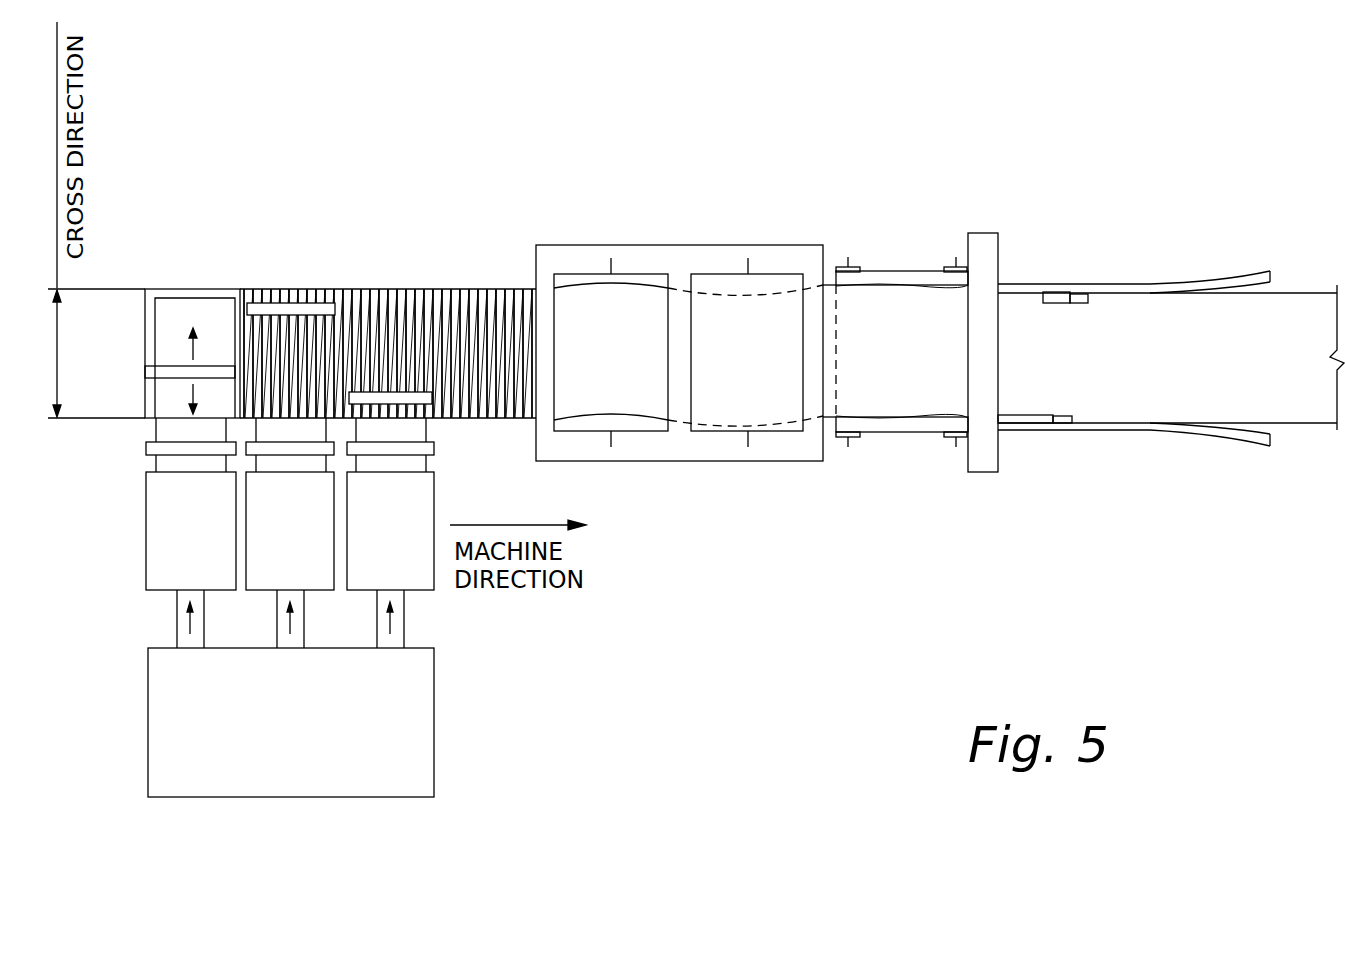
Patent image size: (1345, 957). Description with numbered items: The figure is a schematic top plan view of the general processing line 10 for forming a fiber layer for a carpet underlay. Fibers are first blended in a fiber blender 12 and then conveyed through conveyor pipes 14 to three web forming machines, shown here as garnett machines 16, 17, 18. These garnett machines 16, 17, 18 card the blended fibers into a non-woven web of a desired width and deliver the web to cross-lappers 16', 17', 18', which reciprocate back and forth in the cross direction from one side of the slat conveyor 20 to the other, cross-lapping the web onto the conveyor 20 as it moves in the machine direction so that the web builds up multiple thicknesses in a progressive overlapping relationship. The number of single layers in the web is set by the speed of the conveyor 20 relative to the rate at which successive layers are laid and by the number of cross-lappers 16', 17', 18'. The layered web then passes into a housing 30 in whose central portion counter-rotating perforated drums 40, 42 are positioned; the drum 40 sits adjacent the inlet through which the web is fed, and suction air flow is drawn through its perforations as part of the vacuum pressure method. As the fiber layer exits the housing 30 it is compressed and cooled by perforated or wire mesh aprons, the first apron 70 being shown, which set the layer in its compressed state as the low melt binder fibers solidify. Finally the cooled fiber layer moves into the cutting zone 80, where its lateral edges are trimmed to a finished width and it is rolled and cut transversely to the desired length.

The processing line 10 is at (1170, 153).
The fiber blender 12 is at (434, 728).
The conveyor pipes 14 is at (204, 636).
The garnett machine 16 is at (191, 504).
The garnett machine 17 is at (290, 504).
The garnett machine 18 is at (390, 504).
The cross-lapper 16' is at (164, 353).
The cross-lapper 17' is at (291, 274).
The cross-lapper 18' is at (425, 431).
The slat conveyor 20 is at (391, 289).
The housing 30 is at (777, 245).
The drum 40 is at (597, 421).
The drum 42 is at (793, 419).
The first perforated apron 70 is at (902, 392).
The cutting zone 80 is at (1210, 280).